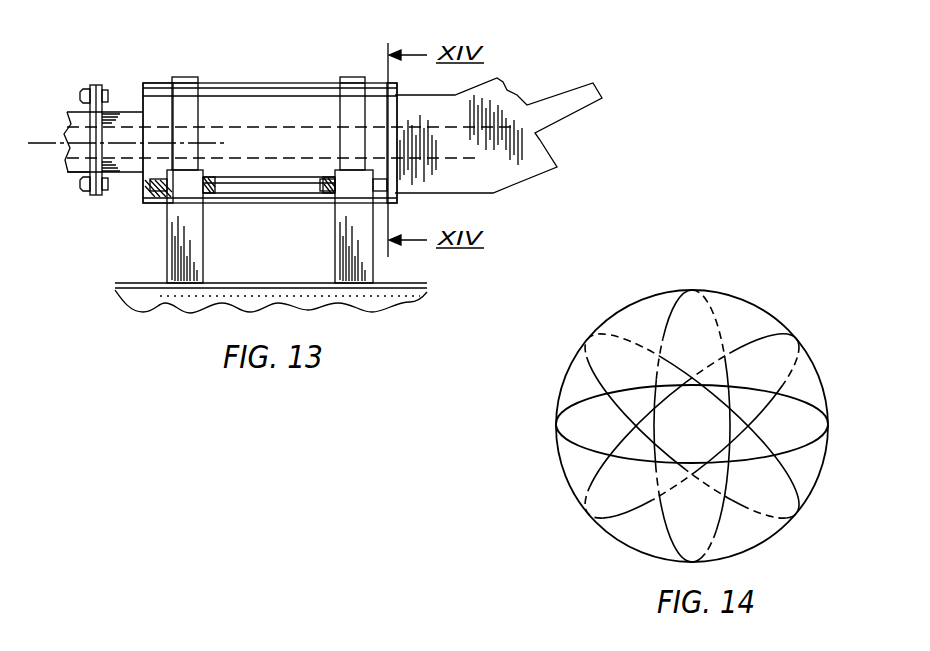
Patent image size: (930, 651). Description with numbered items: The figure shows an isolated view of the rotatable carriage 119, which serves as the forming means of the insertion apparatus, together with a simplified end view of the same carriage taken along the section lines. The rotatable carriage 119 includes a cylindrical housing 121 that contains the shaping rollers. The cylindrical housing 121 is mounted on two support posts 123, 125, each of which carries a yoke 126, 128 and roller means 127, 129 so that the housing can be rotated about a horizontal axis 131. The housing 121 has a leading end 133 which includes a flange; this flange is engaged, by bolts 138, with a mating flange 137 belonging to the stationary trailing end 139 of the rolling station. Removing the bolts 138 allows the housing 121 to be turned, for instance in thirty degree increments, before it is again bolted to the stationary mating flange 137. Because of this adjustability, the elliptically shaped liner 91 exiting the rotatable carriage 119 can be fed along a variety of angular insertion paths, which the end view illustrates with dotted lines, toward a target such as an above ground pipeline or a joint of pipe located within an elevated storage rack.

In FIG. 13, the rotatable carriage 119 is at (209, 49).
In FIG. 13, the cylindrical housing 121 is at (257, 82).
In FIG. 14, the cylindrical housing 121 is at (730, 288).
In FIG. 13, the support post 123 is at (193, 247).
In FIG. 13, the support post 125 is at (363, 264).
In FIG. 13, the yoke 126 is at (187, 78).
In FIG. 13, the roller means 127 is at (157, 196).
In FIG. 13, the yoke 128 is at (347, 78).
In FIG. 13, the roller means 129 is at (321, 203).
In FIG. 13, the horizontal axis 131 is at (38, 142).
In FIG. 13, the leading end 133 is at (128, 167).
In FIG. 13, the mating flange 137 is at (83, 97).
In FIG. 13, the bolts 138 is at (80, 184).
In FIG. 13, the trailing end 139 is at (77, 173).
In FIG. 13, the elliptically shaped liner 91 is at (573, 102).
In FIG. 14, the elliptically shaped liner 91 is at (590, 390).